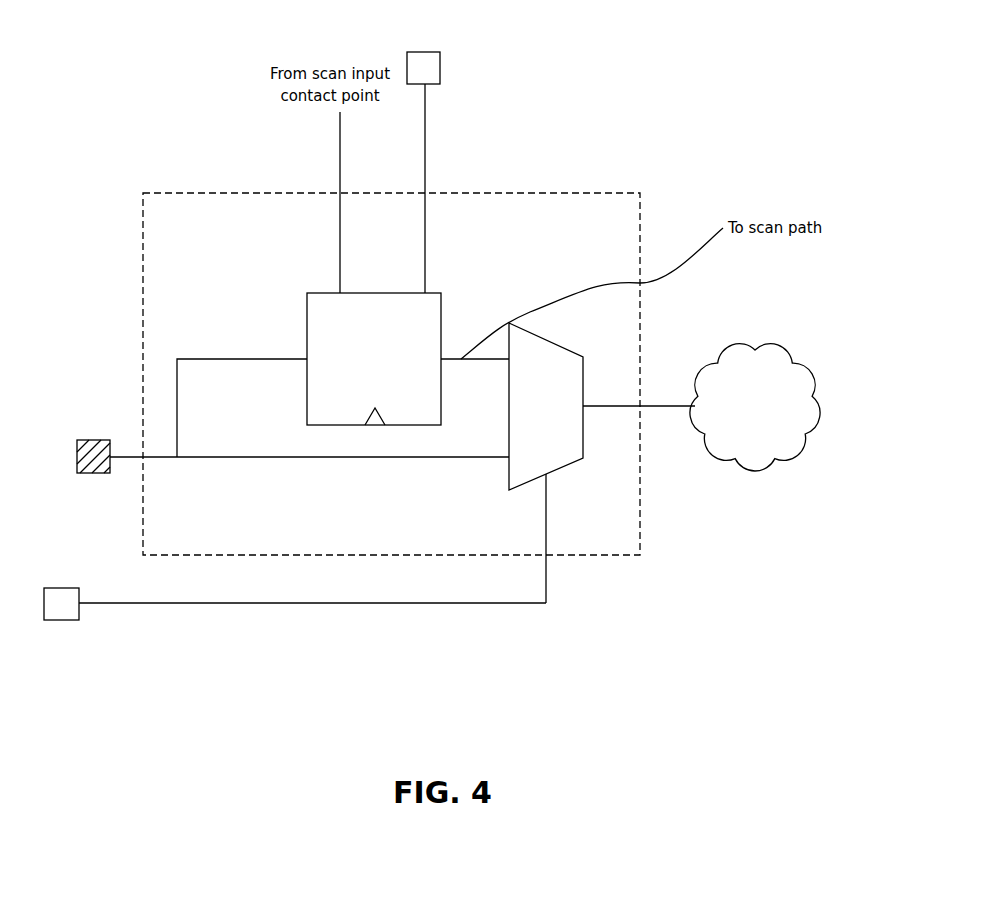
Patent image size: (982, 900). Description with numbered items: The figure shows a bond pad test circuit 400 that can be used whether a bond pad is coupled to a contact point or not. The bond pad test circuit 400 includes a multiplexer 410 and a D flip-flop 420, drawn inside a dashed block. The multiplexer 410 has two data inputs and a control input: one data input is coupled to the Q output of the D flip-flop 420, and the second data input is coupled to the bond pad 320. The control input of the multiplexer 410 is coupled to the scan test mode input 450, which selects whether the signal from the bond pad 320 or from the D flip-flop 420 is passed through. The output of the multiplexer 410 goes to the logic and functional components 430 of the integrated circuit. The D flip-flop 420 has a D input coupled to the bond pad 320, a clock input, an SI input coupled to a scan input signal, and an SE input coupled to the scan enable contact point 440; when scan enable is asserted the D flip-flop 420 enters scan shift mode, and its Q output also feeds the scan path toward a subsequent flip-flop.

The bond pad test circuit 400 is at (628, 193).
The multiplexer 410 is at (550, 335).
The D flip-flop 420 is at (442, 308).
The logic and functional components 430 is at (780, 340).
The scan enable contact point 440 is at (440, 62).
The scan test mode input 450 is at (62, 587).
The bond pad 320 is at (92, 440).